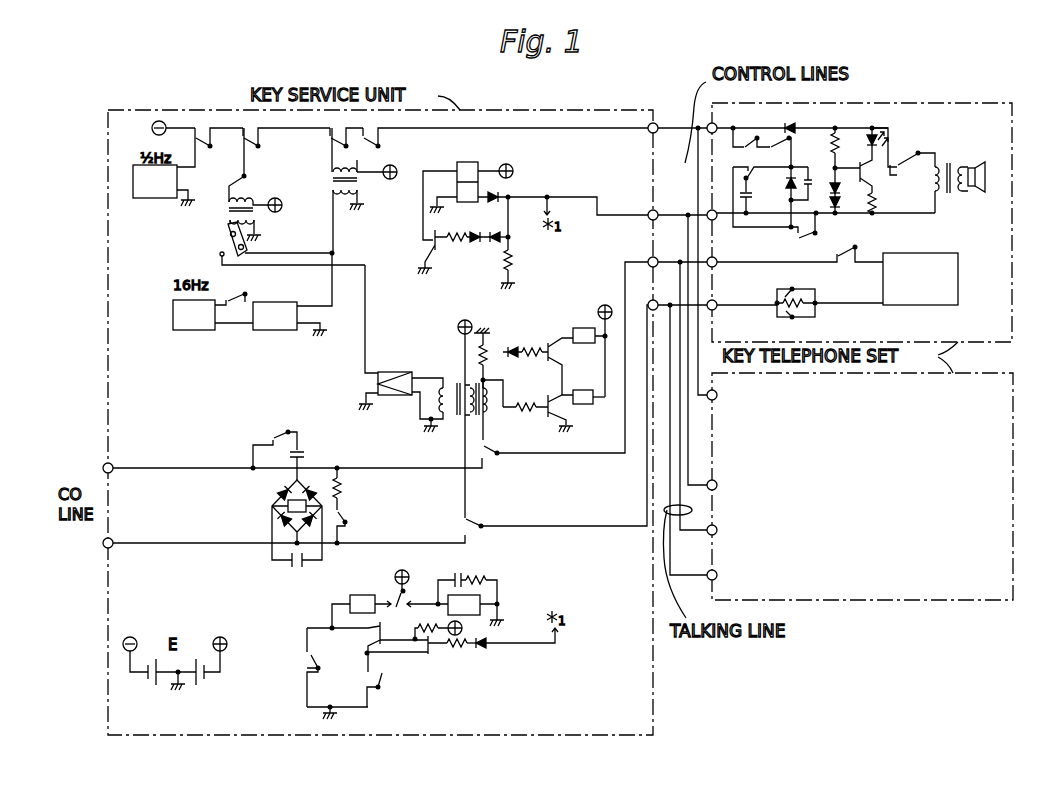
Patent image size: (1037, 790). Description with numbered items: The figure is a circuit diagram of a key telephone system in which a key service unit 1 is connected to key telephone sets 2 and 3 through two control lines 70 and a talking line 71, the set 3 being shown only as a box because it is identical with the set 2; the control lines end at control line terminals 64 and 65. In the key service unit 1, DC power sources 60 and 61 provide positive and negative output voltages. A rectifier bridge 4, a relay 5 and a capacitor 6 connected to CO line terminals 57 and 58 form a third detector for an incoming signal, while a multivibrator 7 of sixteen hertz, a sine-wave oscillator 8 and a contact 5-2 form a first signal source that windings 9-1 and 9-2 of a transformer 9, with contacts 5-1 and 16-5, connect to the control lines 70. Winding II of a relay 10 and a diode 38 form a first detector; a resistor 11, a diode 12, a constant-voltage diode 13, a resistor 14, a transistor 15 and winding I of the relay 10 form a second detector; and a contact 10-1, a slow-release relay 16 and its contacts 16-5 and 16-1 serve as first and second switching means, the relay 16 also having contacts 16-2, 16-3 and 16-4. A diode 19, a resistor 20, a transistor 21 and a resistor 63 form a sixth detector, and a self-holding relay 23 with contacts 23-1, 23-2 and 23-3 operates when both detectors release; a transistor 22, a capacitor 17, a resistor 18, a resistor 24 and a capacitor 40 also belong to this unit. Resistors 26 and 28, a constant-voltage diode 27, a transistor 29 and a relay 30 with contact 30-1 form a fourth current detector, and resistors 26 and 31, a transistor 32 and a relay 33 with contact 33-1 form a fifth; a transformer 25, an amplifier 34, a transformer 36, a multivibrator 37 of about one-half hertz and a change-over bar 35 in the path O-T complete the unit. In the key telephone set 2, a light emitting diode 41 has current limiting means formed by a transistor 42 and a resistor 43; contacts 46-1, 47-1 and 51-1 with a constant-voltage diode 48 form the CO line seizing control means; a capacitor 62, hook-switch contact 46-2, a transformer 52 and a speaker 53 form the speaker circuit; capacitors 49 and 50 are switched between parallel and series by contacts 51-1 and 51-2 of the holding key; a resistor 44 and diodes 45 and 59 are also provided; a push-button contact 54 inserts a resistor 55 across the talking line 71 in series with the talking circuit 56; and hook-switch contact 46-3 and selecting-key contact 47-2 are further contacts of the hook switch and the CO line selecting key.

The key service unit 1 is at (577, 109).
The key telephone set 2 is at (882, 103).
The key telephone set 3 is at (866, 601).
The rectifier bridge 4 is at (278, 498).
The relay 5 is at (286, 508).
The capacitor 6 is at (301, 566).
The multivibrator 7 is at (192, 330).
The sine-wave oscillator 8 is at (270, 330).
The transformer 9 is at (364, 189).
The winding of transformer 9 9-1 is at (333, 199).
The winding of transformer 9 9-2 is at (313, 178).
The relay 10 is at (472, 164).
The contact of relay 10 10-1 is at (408, 597).
The fixed resistor 11 is at (511, 258).
The diode 12 is at (495, 244).
The constant-voltage diode 13 is at (475, 244).
The fixed resistor 14 is at (458, 244).
The transistor 15 is at (429, 267).
The relay 16 is at (496, 601).
The contact of relay 16 16-1 is at (566, 370).
The contact of relay 16 16-2 is at (480, 522).
The contact of relay 16 16-3 is at (272, 443).
The contact of relay 16 16-4 is at (382, 676).
The contact of relay 16 16-5 is at (380, 148).
The capacitor 17 is at (461, 579).
The fixed resistor 18 is at (491, 576).
The diode 19 is at (483, 652).
The fixed resistor 20 is at (462, 652).
The transistor 21 is at (427, 653).
The transistor 22 is at (373, 623).
The relay 23 is at (352, 597).
The contact of relay 23 23-1 is at (319, 663).
The contact of relay 23 23-2 is at (352, 521).
The contact of relay 23 23-3 is at (208, 150).
The fixed resistor 24 is at (342, 489).
The transformer 25 is at (458, 378).
The fixed resistor 26 is at (485, 345).
The constant-voltage diode 27 is at (515, 360).
The fixed resistor 28 is at (535, 349).
The transistor 29 is at (552, 341).
The relay 30 is at (592, 348).
The contact of relay 30 30-1 is at (251, 185).
The fixed resistor 31 is at (518, 412).
The transistor 32 is at (547, 416).
The relay 33 is at (587, 404).
The contact of relay 33 33-1 is at (268, 150).
The amplifier 34 is at (395, 398).
The change-over bar 35 is at (215, 244).
The transformer 36 is at (226, 206).
The multivibrator 37 is at (150, 198).
The diode 38 is at (486, 212).
The capacitor 40 is at (304, 457).
The light emitting diode 41 is at (880, 146).
The transistor 42 is at (860, 182).
The fixed resistor 43 is at (876, 199).
The fixed resistor 44 is at (838, 140).
The diode 45 is at (842, 207).
The contact of hook switch 46-1 is at (789, 167).
The contact of hook switch 46-2 is at (918, 154).
The contact of hook switch 46-3 is at (855, 244).
The contact of CO line selecting key 47-1 is at (752, 126).
The contact of CO line selecting key 47-2 is at (792, 318).
The constant-voltage diode 48 is at (786, 187).
The capacitor 49 is at (810, 180).
The capacitor 50 is at (751, 195).
The contact of CO line holding interlocking key 51-1 is at (800, 238).
The contact of CO line holding interlocking key 51-2 is at (762, 191).
The transformer 52 is at (947, 189).
The speaker 53 is at (976, 191).
The contact of push-button switch 54 is at (792, 288).
The fixed resistor 55 is at (814, 299).
The talking circuit 56 is at (921, 306).
The CO line terminal 57 is at (278, 469).
The CO line terminal 58 is at (269, 545).
The diode 59 is at (793, 132).
The DC power source 60 is at (198, 686).
The DC power source 61 is at (151, 686).
The capacitor 62 is at (897, 169).
The fixed resistor 63 is at (433, 623).
The control line terminal 64 is at (773, 117).
The control line terminal 65 is at (796, 206).
The control lines 70 is at (676, 128).
The talking line 71 is at (664, 307).